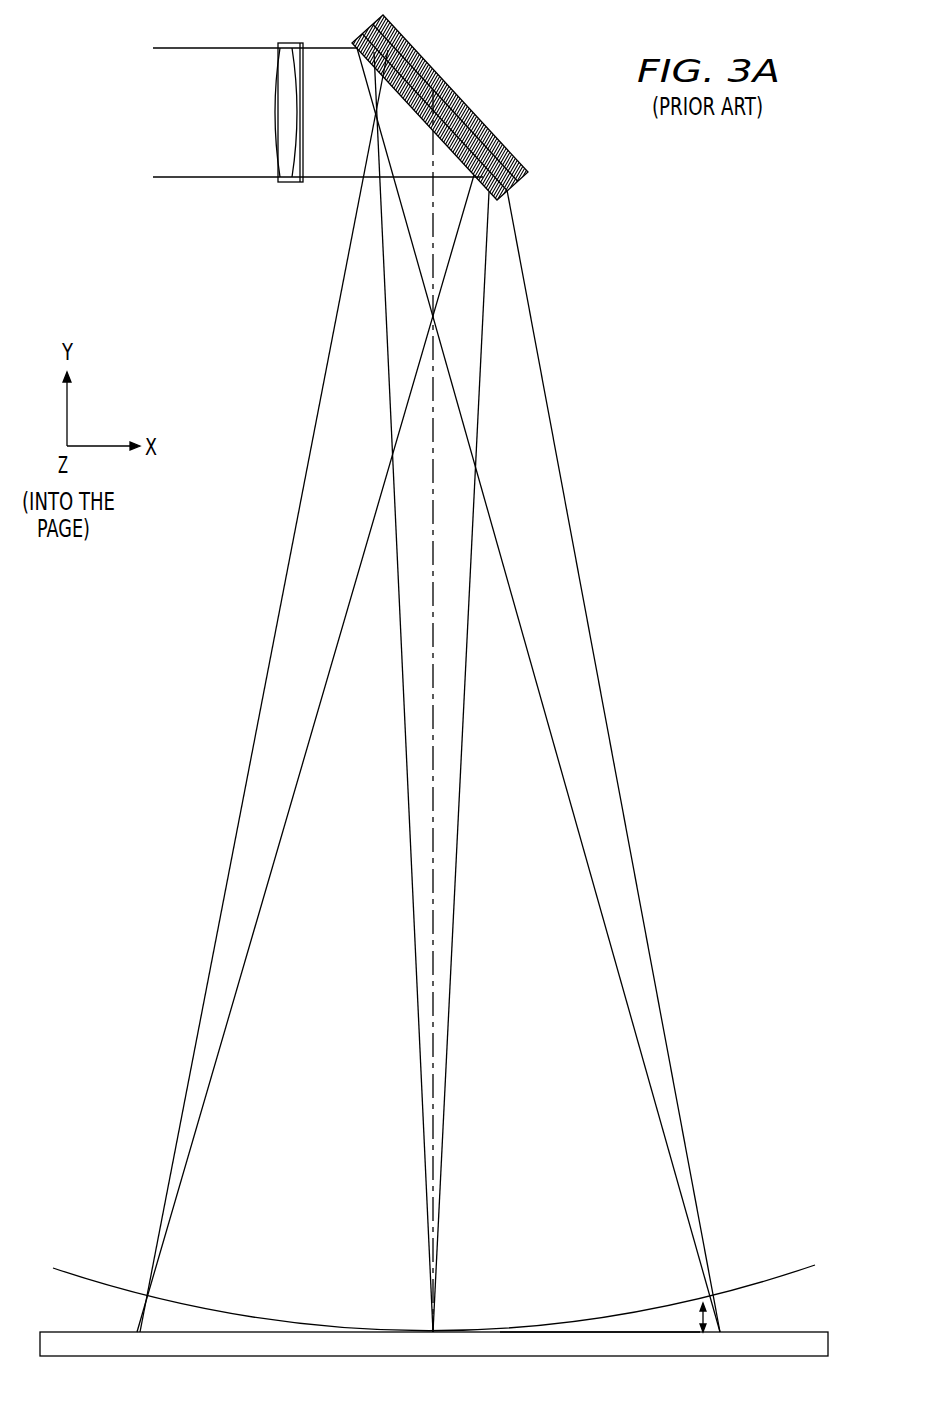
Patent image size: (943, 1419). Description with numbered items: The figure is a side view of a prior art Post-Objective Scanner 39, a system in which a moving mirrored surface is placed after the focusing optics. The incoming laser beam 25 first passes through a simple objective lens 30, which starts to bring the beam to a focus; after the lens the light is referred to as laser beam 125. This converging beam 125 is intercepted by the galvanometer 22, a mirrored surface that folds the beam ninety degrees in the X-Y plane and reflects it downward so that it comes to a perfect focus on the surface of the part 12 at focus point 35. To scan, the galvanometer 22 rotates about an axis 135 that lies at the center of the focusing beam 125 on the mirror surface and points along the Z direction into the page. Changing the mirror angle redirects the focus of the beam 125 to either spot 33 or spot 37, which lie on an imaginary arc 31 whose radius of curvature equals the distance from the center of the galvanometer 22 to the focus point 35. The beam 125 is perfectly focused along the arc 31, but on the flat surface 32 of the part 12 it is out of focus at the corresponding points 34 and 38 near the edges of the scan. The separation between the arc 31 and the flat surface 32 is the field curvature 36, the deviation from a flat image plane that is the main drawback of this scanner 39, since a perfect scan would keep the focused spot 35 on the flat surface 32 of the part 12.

The part 12 is at (255, 1332).
The galvanometer 22 is at (431, 117).
The laser beam 25 is at (207, 177).
The objective lens 30 is at (282, 183).
The arc 31 is at (90, 1278).
The flat surface 32 is at (590, 1332).
The spot 33 is at (175, 1280).
The point 34 is at (133, 1332).
The focus point 35 is at (455, 1314).
The field curvature 36 is at (700, 1317).
The spot 37 is at (748, 1272).
The point 38 is at (725, 1332).
The Post-Objective Scanner 39 is at (675, 460).
The laser beam 125 is at (338, 177).
The axis 135 is at (442, 113).